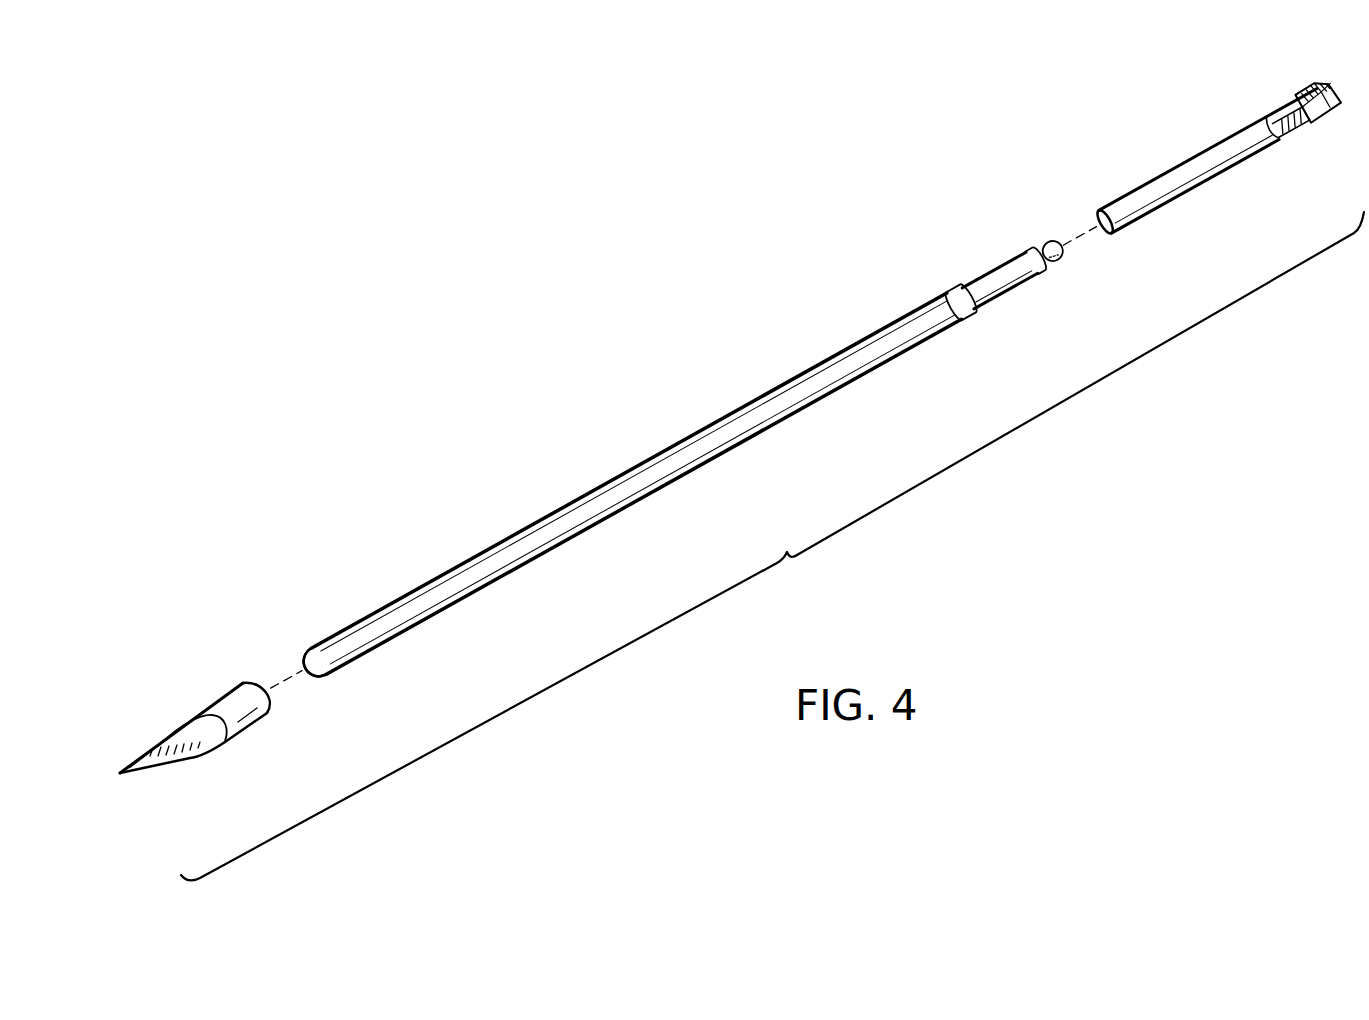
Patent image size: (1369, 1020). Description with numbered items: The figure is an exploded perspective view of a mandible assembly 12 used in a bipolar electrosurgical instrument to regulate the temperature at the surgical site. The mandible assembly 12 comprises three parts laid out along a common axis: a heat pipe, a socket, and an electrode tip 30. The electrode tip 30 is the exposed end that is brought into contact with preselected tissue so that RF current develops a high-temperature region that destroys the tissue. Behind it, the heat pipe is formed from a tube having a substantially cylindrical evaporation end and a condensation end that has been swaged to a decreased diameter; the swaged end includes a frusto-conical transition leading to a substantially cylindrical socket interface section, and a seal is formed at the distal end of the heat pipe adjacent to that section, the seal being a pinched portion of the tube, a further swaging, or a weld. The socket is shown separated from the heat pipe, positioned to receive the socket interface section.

The mandible assembly 12 is at (772, 546).
The electrode tip 30 is at (207, 694).